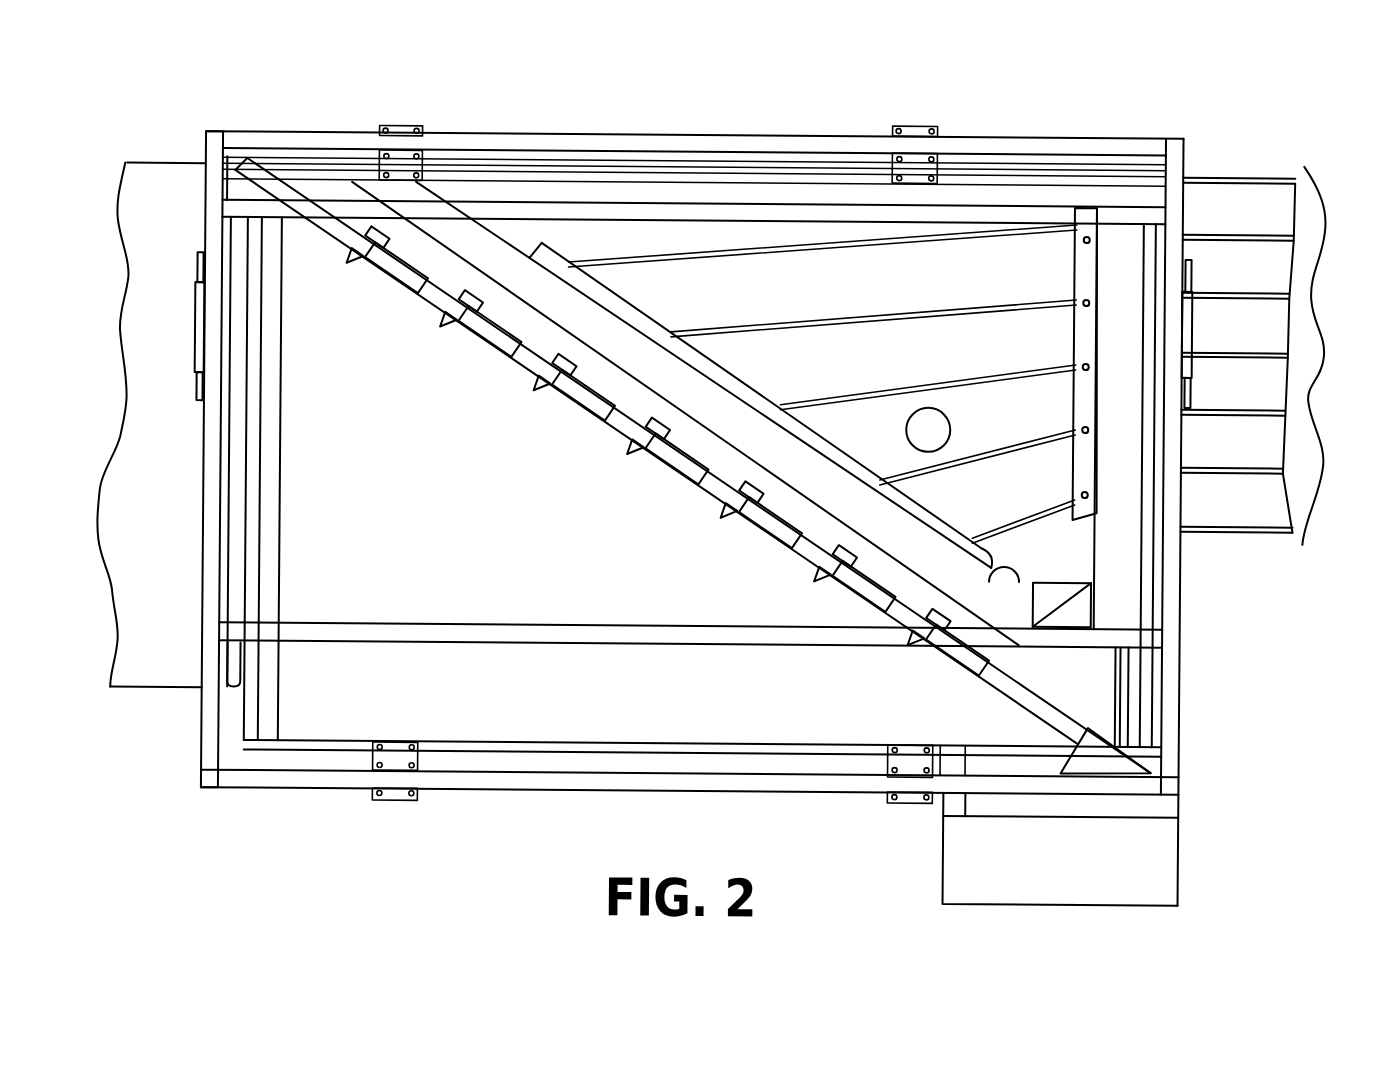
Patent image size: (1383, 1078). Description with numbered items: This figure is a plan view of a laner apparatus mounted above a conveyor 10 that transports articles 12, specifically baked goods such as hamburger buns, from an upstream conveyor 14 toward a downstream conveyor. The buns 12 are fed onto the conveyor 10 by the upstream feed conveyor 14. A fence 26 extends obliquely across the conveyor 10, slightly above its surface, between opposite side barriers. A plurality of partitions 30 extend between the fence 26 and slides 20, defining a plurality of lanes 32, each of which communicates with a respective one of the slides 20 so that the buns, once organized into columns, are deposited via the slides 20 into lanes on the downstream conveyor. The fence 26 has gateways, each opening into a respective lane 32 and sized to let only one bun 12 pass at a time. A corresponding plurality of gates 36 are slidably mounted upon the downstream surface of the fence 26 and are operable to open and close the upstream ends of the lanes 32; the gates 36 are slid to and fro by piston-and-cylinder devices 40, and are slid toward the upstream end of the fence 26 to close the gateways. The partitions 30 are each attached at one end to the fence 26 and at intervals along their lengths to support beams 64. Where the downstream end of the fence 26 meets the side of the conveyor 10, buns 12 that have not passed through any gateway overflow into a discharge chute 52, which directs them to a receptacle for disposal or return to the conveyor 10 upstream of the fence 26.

The conveyor 10 is at (350, 455).
The articles 12 is at (930, 430).
The upstream conveyor 14 is at (160, 292).
The slides 20 is at (493, 835).
The fence 26 is at (493, 362).
The partitions 30 is at (1062, 294).
The lanes 32 is at (975, 275).
The gates 36 is at (570, 393).
The piston-and-cylinder devices 40 is at (718, 445).
The discharge chute 52 is at (1133, 851).
The support beams 64 is at (1000, 604).